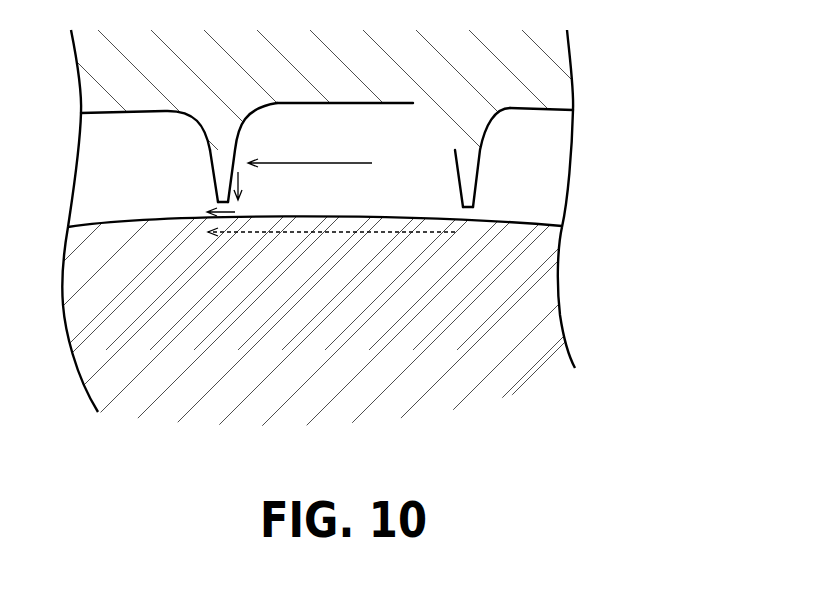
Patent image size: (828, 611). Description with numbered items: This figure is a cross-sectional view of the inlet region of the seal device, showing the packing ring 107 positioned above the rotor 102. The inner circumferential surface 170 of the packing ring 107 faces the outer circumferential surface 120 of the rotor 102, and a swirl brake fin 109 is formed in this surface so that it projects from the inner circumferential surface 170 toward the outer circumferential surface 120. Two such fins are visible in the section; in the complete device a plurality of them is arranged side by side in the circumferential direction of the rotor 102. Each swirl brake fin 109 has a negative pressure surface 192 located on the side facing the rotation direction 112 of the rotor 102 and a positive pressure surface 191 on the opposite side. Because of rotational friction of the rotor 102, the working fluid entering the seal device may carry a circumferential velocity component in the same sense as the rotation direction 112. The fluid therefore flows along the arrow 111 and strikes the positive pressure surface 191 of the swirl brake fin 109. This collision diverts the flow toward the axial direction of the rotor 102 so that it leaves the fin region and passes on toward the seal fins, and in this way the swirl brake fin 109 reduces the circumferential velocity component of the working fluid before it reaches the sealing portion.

The rotor 102 is at (500, 269).
The packing ring 107 is at (553, 71).
The swirl brake fin 109 is at (225, 190).
The direction of working fluid flow 111 is at (277, 163).
The rotation direction of the rotor 112 is at (317, 233).
The outer circumferential surface of the rotor 120 is at (120, 222).
The inner circumferential surface of the packing ring 170 is at (110, 113).
The positive pressure surface 191 is at (237, 134).
The negative pressure surface 192 is at (215, 170).